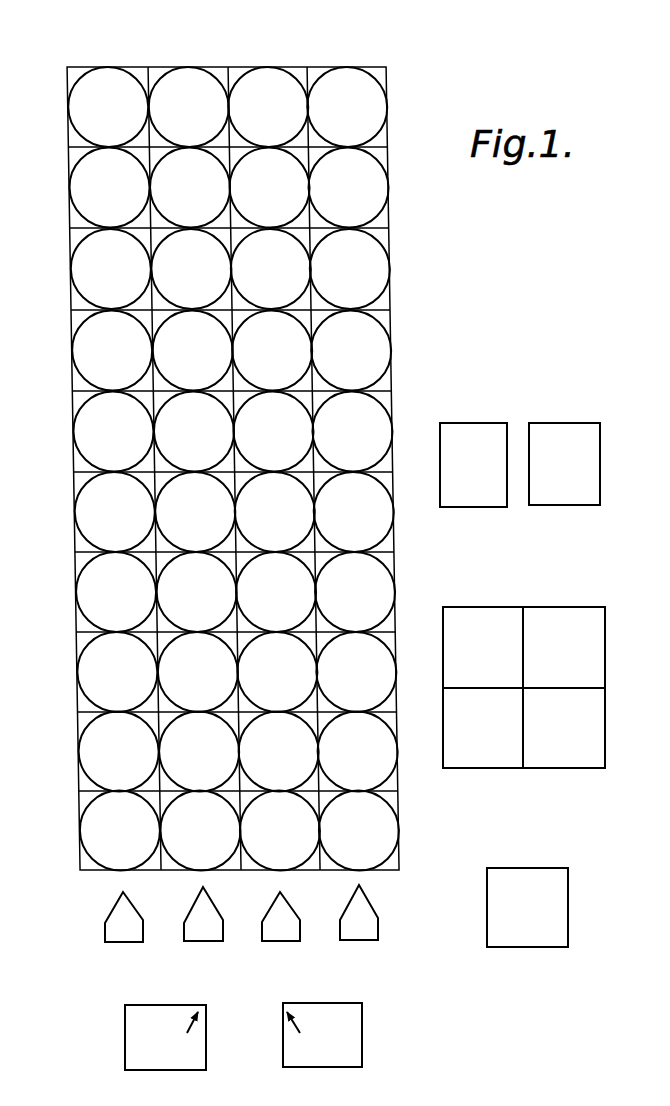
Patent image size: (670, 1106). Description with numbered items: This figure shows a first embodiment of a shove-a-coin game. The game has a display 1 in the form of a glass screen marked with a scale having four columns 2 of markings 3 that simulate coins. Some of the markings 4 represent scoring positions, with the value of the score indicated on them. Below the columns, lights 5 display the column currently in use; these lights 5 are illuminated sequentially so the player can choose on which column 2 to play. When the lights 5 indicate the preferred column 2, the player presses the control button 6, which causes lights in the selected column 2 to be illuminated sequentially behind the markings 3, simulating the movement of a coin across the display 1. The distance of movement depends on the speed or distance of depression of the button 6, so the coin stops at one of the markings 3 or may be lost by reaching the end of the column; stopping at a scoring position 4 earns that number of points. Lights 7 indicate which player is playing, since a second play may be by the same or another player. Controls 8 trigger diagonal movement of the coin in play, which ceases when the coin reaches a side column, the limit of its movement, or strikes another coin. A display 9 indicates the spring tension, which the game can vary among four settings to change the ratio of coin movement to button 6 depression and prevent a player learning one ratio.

The display 1 is at (420, 121).
The columns 2 is at (177, 56).
The markings 3 is at (72, 430).
The scoring positions 4 is at (72, 181).
The lights 5 is at (188, 935).
The control button 6 is at (500, 868).
The lights 7 is at (537, 422).
The controls 8 is at (283, 1020).
The display 9 is at (483, 607).